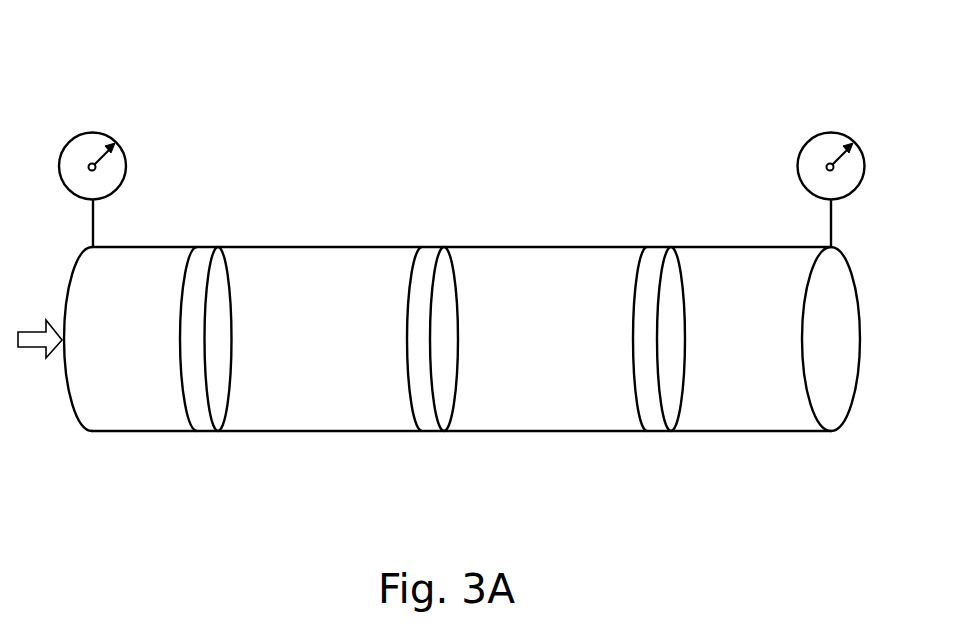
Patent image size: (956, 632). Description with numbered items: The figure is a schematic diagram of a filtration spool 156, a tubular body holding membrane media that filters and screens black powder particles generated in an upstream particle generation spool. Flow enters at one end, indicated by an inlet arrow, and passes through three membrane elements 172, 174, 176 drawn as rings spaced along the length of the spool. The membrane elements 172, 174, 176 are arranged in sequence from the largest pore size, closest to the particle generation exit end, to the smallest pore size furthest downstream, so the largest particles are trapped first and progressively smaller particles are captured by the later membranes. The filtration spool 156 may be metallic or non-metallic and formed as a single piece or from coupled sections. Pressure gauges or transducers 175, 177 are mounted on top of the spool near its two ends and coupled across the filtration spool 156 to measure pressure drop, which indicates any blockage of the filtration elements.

The filtration spool 156 is at (193, 91).
The membrane element 172 is at (232, 383).
The membrane element 174 is at (458, 383).
The membrane element 176 is at (684, 383).
The pressure gauge or transducer 175 is at (73, 137).
The pressure gauge or transducer 177 is at (831, 131).